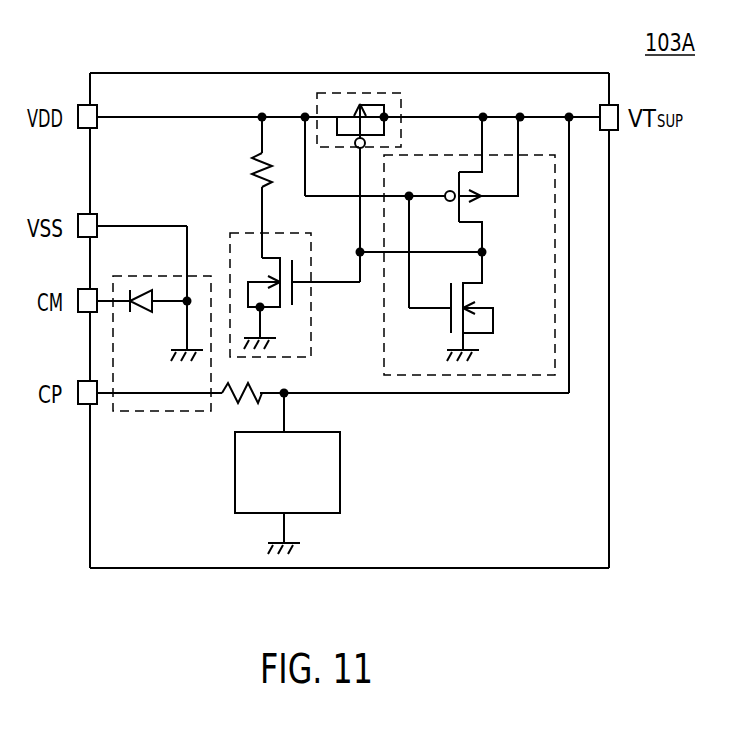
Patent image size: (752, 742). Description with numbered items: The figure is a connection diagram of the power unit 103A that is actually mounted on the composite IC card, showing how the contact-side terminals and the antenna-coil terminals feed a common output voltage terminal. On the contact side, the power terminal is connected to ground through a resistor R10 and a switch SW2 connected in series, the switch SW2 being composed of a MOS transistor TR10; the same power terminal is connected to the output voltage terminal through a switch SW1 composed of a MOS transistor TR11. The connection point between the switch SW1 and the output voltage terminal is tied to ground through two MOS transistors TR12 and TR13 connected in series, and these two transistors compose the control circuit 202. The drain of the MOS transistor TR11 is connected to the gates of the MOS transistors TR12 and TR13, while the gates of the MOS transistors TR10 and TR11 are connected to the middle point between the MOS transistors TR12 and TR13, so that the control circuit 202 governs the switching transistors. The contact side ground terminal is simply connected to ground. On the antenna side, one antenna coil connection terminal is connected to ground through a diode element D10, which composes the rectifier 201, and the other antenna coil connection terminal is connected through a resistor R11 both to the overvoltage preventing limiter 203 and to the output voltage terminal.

The power unit 103A is at (452, 73).
The MOS transistor TR11 is at (351, 90).
The switch SW1 is at (403, 108).
The switch SW2 is at (250, 233).
The MOS transistor TR10 is at (296, 323).
The resistor R10 is at (252, 170).
The resistor R11 is at (224, 405).
The diode element D10 is at (143, 289).
The MOS transistor TR12 is at (487, 218).
The MOS transistor TR13 is at (496, 321).
The rectifier 201 is at (213, 366).
The control circuit 202 is at (381, 268).
The overvoltage preventing limiter 203 is at (341, 467).